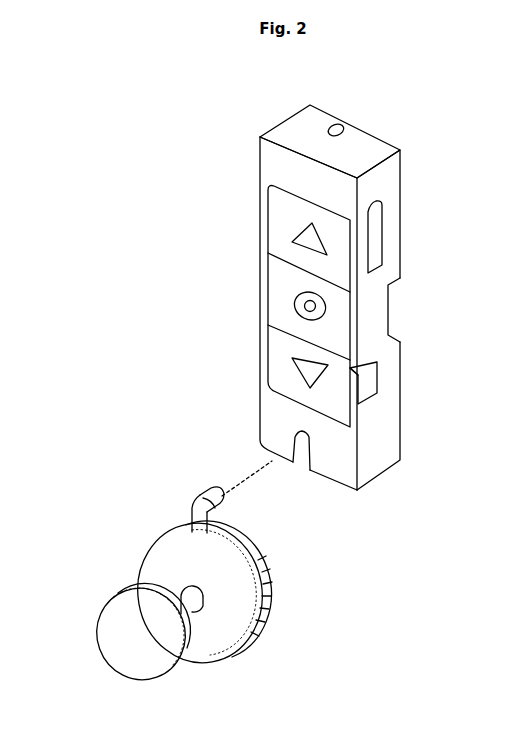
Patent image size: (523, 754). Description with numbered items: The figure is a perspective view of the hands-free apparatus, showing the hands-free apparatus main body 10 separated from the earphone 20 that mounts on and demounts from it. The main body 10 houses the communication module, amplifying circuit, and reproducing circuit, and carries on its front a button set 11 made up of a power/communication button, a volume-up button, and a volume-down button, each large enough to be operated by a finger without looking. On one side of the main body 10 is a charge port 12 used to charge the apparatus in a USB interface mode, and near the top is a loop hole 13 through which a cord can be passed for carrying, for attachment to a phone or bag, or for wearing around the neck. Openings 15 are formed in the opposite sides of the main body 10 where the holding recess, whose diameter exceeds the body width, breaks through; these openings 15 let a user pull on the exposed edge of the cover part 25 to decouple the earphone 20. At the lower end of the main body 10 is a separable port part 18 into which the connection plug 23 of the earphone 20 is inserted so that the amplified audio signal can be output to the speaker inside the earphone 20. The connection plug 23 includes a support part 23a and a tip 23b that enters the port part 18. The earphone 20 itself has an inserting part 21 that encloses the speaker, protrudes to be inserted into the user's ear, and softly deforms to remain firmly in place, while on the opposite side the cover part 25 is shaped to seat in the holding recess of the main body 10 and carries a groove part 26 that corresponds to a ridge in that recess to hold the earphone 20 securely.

The hands-free apparatus main body 10 is at (317, 283).
The button set 11 is at (275, 234).
The charge port 12 is at (382, 228).
The loop hole 13 is at (340, 123).
The openings 15 is at (392, 315).
The separable port part 18 is at (301, 466).
The earphone 20 is at (186, 564).
The inserting part 21 is at (118, 648).
The connection plug 23 is at (205, 484).
The support part 23a is at (188, 513).
The hook tip 23b is at (226, 498).
The cover part 25 is at (268, 628).
The groove part 26 is at (265, 594).